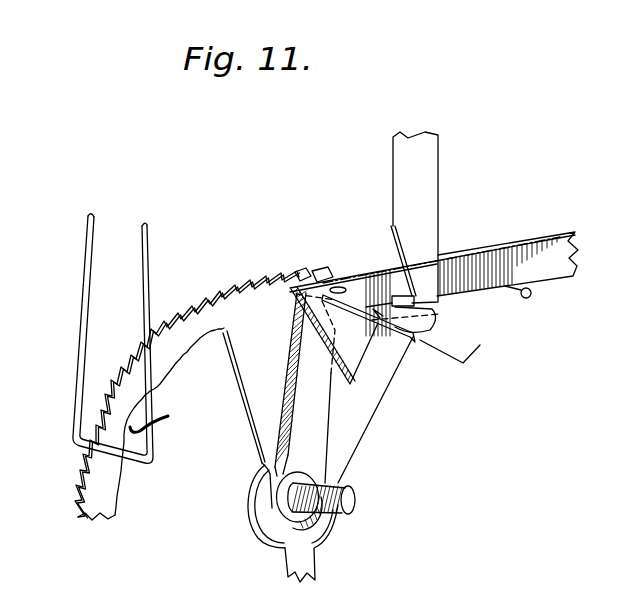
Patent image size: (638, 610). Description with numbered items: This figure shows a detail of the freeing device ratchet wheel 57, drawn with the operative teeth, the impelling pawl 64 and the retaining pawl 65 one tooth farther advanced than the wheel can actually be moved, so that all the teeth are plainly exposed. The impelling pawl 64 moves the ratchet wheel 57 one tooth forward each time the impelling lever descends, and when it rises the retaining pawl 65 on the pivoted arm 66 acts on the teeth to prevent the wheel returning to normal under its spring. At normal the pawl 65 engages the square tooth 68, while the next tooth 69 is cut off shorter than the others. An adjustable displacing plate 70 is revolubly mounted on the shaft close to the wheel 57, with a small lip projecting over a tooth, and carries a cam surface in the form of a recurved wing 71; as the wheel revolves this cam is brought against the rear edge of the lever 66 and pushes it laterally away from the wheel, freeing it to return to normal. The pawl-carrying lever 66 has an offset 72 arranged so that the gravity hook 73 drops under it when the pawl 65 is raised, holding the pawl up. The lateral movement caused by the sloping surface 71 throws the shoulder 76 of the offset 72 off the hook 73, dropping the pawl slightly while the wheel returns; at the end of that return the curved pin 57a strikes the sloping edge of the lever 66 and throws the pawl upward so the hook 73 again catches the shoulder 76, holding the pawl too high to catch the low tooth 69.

The ratchet wheel 57 is at (110, 490).
The curved pin 57a is at (202, 396).
The impelling pawl 64 is at (86, 258).
The retaining pawl 65 is at (356, 280).
The pivoted arm 66 is at (540, 262).
The square tooth 68 is at (86, 452).
The short tooth 69 is at (93, 422).
The adjustable displacing plate 70 is at (320, 276).
The recurved wing 71 is at (298, 329).
The offset 72 is at (413, 340).
The gravity hook 73 is at (448, 173).
The shoulder 76 is at (396, 238).